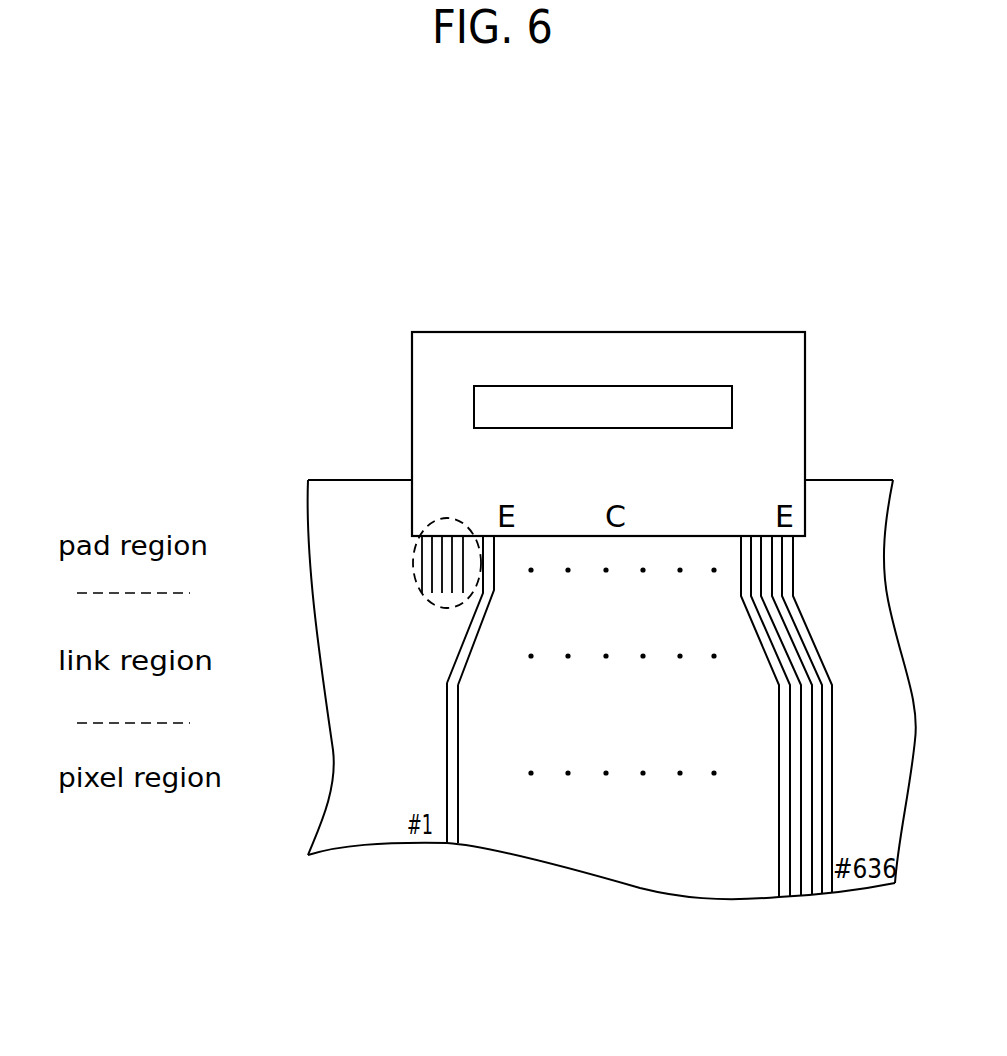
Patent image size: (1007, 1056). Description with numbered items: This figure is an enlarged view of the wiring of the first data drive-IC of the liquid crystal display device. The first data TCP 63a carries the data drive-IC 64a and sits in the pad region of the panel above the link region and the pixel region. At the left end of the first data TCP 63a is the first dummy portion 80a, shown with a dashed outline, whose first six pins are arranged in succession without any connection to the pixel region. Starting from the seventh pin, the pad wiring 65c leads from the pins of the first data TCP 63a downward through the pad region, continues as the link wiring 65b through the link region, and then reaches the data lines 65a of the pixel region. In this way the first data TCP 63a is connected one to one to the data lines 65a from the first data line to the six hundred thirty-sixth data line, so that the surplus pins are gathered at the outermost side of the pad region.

The first data TCP 63a is at (630, 332).
The data drive-IC 64a is at (535, 386).
The data lines 65a is at (447, 768).
The link wiring 65b is at (447, 689).
The pad wiring 65c is at (483, 563).
The first dummy portion 80a is at (413, 567).